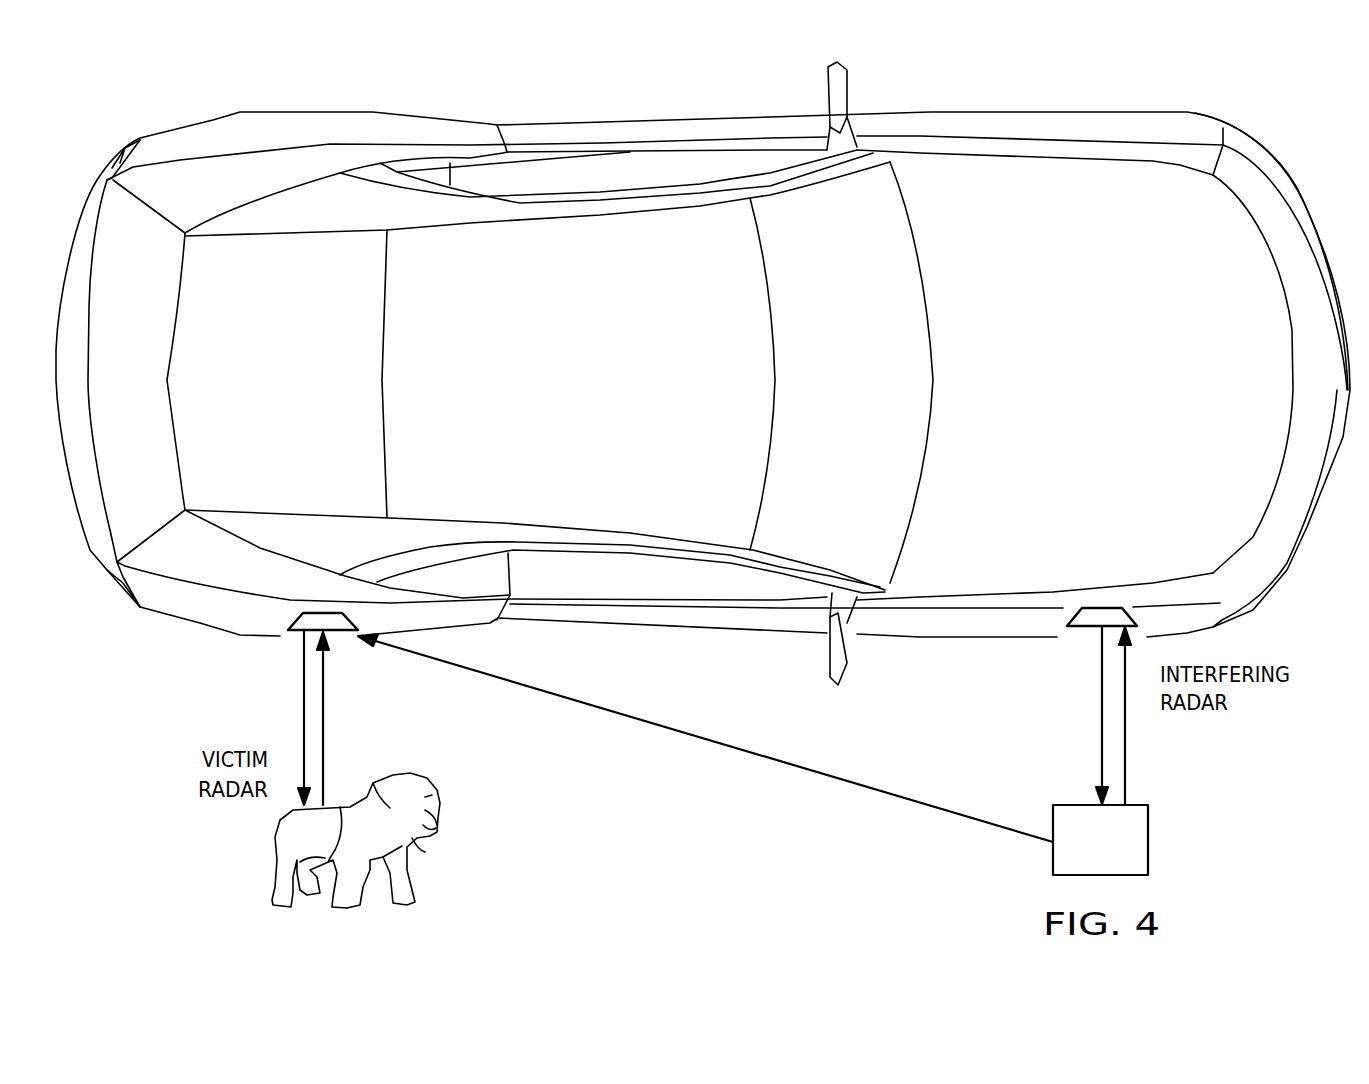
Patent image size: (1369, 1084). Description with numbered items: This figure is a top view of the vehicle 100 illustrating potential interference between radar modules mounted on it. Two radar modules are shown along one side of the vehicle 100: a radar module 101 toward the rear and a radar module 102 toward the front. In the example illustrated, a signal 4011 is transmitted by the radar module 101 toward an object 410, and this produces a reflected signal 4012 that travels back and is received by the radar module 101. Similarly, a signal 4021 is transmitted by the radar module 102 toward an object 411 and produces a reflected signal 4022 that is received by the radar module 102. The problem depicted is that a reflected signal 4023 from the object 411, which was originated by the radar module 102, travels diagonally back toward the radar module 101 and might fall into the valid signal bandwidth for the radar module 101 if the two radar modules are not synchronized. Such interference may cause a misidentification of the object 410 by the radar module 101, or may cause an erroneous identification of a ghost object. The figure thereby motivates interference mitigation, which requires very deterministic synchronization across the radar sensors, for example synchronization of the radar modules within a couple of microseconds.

The vehicle 100 is at (1137, 387).
The radar module 101 is at (290, 620).
The radar module 102 is at (1080, 618).
The signal 4011 is at (303, 721).
The reflected signal 4012 is at (324, 721).
The signal 4021 is at (1101, 721).
The reflected signal 4022 is at (1126, 721).
The reflected signal 4023 is at (706, 772).
The object 410 is at (276, 853).
The object 411 is at (1148, 840).